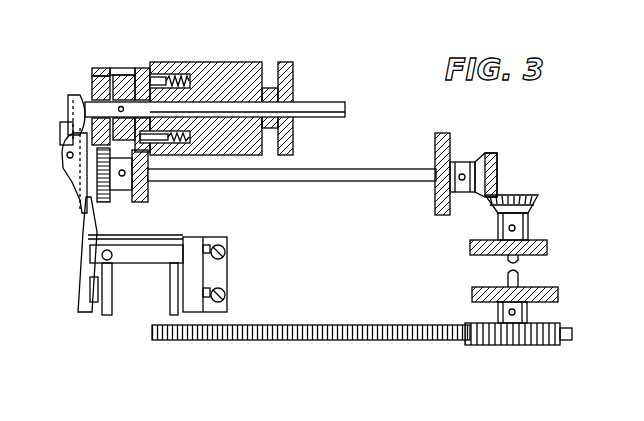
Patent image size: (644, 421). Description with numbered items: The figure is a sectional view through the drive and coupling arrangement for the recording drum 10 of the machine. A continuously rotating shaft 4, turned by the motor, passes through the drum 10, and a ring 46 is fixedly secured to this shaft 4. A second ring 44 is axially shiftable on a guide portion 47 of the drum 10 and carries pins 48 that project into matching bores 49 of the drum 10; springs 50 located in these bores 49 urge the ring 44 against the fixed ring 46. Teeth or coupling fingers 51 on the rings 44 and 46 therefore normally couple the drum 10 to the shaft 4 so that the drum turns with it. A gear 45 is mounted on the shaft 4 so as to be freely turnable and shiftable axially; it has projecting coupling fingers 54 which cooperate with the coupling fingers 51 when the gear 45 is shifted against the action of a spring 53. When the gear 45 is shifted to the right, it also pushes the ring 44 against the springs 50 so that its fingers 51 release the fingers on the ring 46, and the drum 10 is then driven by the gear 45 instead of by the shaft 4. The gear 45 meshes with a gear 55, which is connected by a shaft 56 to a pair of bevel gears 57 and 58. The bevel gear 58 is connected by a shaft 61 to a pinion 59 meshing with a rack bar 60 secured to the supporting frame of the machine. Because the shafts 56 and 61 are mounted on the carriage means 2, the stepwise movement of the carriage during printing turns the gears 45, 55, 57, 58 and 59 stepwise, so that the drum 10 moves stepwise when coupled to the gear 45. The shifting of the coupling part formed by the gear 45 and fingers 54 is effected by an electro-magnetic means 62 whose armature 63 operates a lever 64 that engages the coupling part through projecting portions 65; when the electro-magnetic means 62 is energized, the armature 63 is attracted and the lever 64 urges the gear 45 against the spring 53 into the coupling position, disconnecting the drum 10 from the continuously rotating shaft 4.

The carriage means 2 is at (452, 135).
The shaft 4 is at (308, 108).
The drum 10 is at (250, 67).
The ring 44 is at (145, 202).
The gear 45 is at (85, 138).
The ring 46 is at (107, 93).
The guide portion 47 is at (160, 75).
The pins 48 is at (165, 80).
The bores 49 is at (177, 80).
The springs 50 is at (188, 80).
The coupling fingers 51 is at (137, 92).
The spring 53 is at (97, 100).
The coupling fingers 54 is at (130, 82).
The gear 55 is at (100, 202).
The shaft 56 is at (393, 180).
The bevel gear 57 is at (497, 172).
The bevel gear 58 is at (535, 196).
The pinion 59 is at (477, 325).
The rack bar 60 is at (327, 325).
The shaft 61 is at (517, 282).
The electro-magnetic means 62 is at (137, 305).
The armature 63 is at (77, 298).
The lever 64 is at (73, 185).
The projecting portions 65 is at (80, 115).